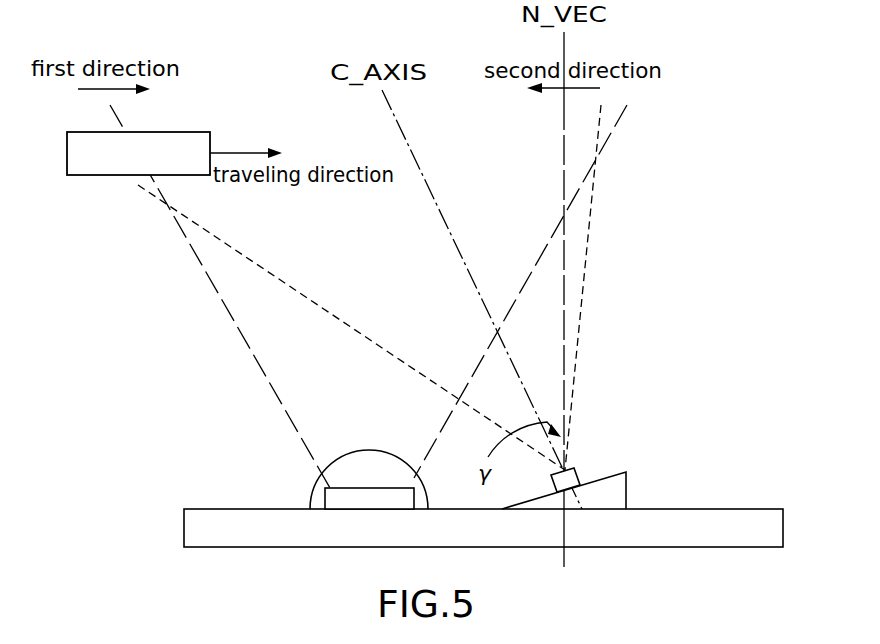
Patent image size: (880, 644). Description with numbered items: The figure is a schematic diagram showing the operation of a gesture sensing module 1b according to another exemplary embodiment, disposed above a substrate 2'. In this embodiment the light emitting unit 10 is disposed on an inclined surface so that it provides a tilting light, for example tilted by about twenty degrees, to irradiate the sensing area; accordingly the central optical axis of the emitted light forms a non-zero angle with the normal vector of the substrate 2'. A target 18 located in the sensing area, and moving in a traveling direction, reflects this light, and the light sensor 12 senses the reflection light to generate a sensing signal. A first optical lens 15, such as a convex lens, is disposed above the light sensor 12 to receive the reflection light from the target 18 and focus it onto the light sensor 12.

The target 18 is at (90, 175).
The substrate 2' is at (491, 507).
The gesture sensing module 1b is at (634, 437).
The light emitting unit 10 is at (576, 466).
The first optical lens 15 is at (352, 451).
The light sensor 12 is at (324, 498).